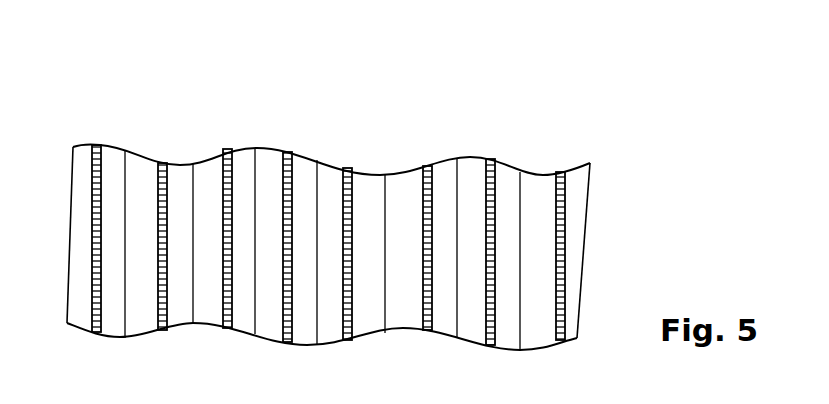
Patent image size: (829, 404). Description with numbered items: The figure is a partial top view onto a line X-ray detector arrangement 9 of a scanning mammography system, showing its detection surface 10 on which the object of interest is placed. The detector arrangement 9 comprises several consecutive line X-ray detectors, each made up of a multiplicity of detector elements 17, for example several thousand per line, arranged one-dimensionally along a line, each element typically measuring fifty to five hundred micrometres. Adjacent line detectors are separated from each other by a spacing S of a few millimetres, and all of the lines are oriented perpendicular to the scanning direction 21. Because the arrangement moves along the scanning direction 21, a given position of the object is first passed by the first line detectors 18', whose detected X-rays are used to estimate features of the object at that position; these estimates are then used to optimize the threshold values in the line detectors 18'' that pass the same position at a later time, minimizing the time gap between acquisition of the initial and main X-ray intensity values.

The X-ray detector arrangement 9 is at (684, 108).
The detection surface 10 is at (499, 303).
The line detectors 18'' is at (262, 196).
The first line detectors 18' is at (525, 207).
The detector elements 17 is at (493, 227).
The scanning direction 21 is at (160, 90).
The spacing S is at (427, 168).